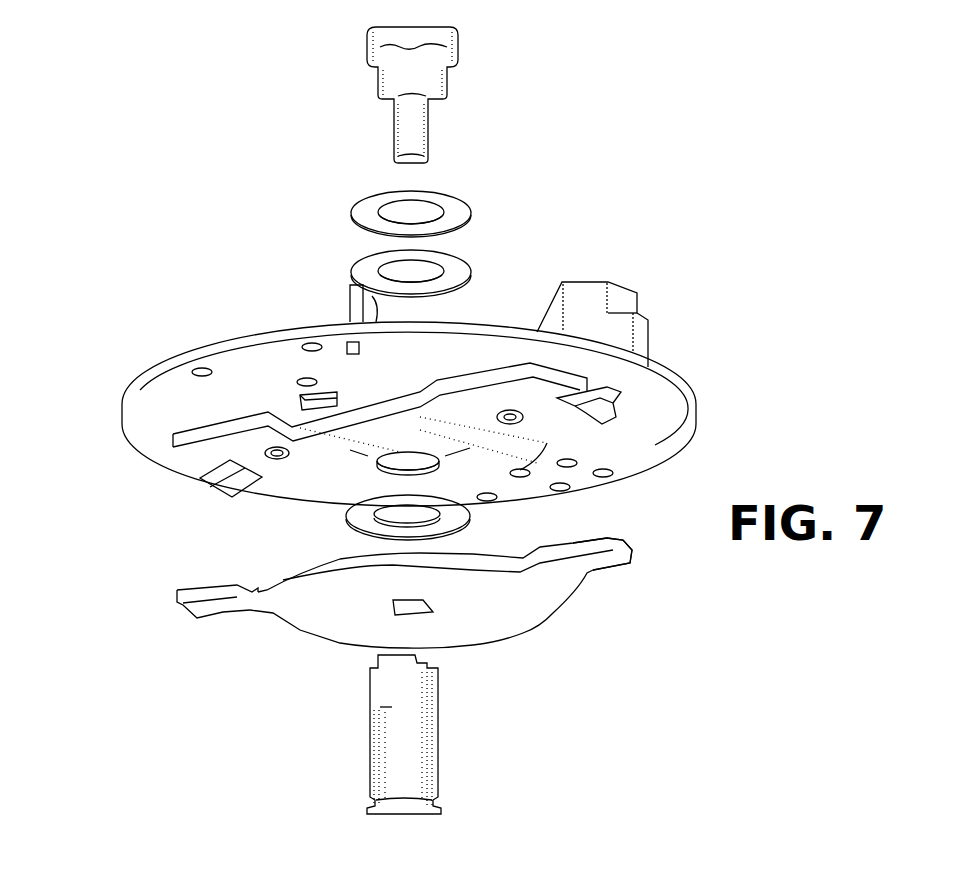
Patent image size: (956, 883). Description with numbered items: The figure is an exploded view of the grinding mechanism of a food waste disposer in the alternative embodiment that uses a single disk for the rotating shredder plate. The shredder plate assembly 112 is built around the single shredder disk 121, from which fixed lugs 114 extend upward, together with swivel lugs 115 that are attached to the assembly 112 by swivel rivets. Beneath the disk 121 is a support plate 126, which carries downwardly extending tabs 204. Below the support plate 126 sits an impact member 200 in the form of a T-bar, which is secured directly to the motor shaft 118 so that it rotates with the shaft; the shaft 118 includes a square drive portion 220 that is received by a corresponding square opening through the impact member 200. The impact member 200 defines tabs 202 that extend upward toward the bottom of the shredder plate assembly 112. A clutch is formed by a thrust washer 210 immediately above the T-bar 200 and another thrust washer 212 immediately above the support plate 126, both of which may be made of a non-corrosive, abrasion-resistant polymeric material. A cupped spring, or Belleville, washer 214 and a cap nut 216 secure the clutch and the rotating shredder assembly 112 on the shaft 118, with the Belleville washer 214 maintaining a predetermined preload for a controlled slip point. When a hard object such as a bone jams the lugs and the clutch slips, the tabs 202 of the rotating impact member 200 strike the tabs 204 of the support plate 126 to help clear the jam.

The shredder plate assembly 112 is at (388, 393).
The fixed lugs 114 is at (350, 300).
The swivel lugs 115 is at (573, 292).
The motor shaft 118 is at (343, 734).
The shredder disk 121 is at (177, 365).
The support plate 126 is at (553, 377).
The impact member 200 is at (398, 599).
The tabs 202 is at (690, 620).
The tabs 204 is at (215, 500).
The thrust washer 210 is at (470, 511).
The thrust washer 212 is at (470, 268).
The Belleville washer 214 is at (355, 212).
The cap nut 216 is at (367, 50).
The square drive portion 220 is at (380, 688).